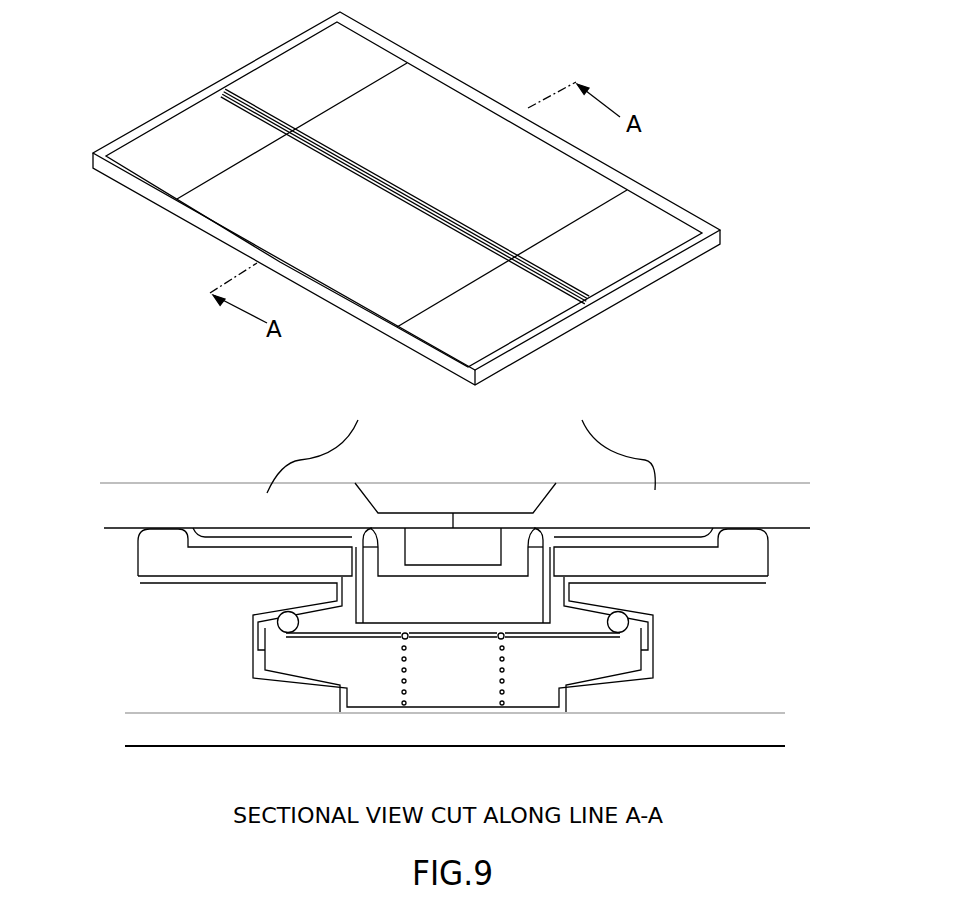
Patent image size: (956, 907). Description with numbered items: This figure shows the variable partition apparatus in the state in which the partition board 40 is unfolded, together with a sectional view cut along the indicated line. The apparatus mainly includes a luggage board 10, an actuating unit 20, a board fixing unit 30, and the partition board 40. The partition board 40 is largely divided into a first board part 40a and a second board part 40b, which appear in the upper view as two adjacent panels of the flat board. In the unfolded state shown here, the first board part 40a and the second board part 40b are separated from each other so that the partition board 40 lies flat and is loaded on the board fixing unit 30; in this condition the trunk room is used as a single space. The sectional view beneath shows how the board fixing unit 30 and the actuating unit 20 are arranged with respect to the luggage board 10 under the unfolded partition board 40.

The luggage board 10 is at (677, 211).
The actuating unit 20 is at (252, 652).
The board fixing unit 30 is at (138, 558).
The partition board 40 is at (580, 423).
The first board part 40a is at (593, 270).
The second board part 40b is at (363, 283).